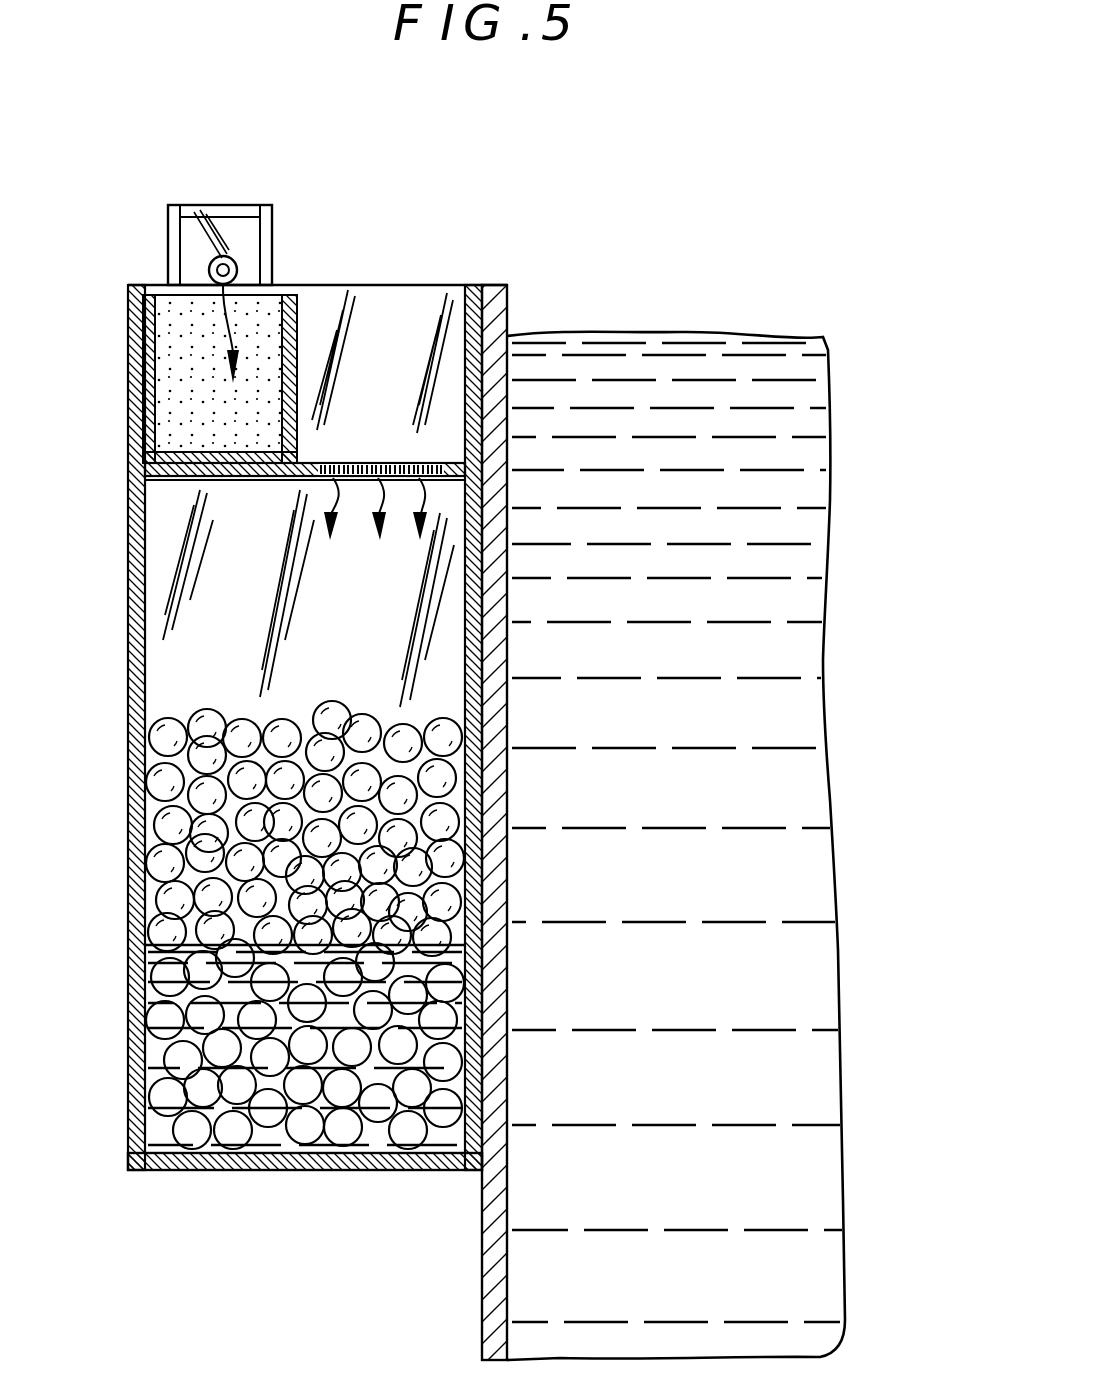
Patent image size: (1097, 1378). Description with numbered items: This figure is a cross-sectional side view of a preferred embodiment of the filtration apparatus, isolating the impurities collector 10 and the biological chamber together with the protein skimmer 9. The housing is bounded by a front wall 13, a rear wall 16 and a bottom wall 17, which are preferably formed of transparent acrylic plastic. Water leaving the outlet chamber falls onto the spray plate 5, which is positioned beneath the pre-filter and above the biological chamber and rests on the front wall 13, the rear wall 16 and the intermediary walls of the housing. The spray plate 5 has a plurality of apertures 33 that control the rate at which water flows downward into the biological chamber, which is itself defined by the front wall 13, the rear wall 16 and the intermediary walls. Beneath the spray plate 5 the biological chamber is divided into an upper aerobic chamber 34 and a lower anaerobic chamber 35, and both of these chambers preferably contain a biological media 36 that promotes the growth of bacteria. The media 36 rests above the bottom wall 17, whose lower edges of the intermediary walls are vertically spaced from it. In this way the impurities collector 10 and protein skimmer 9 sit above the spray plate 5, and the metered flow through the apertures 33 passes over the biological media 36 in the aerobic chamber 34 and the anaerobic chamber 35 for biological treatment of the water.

The spray plate 5 is at (193, 460).
The protein skimmer 9 is at (193, 247).
The impurities collector 10 is at (272, 312).
The front wall 13 is at (510, 471).
The rear wall 16 is at (130, 900).
The bottom wall 17 is at (287, 1171).
The apertures 33 is at (445, 458).
The aerobic chamber 34 is at (143, 806).
The anaerobic chamber 35 is at (143, 997).
The biological media 36 is at (173, 1097).